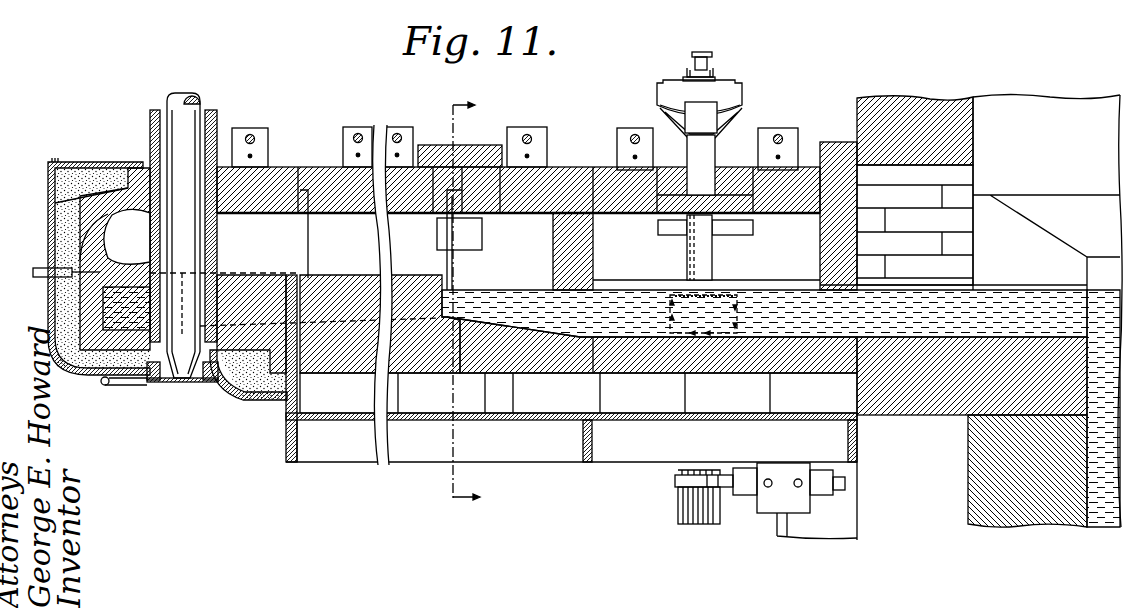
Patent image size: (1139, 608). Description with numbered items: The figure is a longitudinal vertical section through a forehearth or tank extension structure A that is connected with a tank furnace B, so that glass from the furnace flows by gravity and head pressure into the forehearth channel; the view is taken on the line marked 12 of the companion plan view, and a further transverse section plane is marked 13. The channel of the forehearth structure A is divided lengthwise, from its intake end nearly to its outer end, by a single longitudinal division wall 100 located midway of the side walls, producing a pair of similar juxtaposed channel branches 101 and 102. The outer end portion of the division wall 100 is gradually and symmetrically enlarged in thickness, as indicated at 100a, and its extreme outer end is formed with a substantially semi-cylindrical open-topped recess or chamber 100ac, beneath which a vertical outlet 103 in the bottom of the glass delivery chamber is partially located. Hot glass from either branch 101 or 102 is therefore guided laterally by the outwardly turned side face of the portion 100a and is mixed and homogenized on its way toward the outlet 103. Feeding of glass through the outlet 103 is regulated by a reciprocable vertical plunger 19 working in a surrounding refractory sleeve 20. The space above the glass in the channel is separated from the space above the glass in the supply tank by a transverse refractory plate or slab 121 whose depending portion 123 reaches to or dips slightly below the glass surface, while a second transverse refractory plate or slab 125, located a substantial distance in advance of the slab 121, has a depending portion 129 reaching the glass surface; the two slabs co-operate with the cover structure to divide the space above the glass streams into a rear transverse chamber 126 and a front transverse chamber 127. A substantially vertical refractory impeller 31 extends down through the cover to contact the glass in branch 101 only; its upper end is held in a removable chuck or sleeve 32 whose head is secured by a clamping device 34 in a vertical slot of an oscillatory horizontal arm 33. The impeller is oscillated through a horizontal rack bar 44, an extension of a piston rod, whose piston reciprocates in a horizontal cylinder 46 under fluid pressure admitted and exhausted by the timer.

The forehearth or tank extension structure A is at (83, 150).
The tank furnace B is at (962, 518).
The section line of Fig. 12 is at (17, 290).
The section line of Fig. 13 is at (483, 303).
The reciprocable vertical plunger 19 is at (185, 117).
The refractory sleeve 20 is at (214, 262).
The impeller 31 is at (703, 266).
The chuck or sleeve 32 is at (710, 120).
The oscillatory horizontal arm 33 is at (733, 97).
The clamping device 34 is at (712, 73).
The horizontal rack bar 44 is at (677, 479).
The horizontal cylinder 46 is at (757, 502).
The longitudinal division wall 100 is at (393, 286).
The enlarged outer end portion of the division wall 100a is at (310, 290).
The semi-cylindrical open-topped recess or chamber 100ac is at (235, 280).
The channel branch 101 is at (310, 330).
The channel branch 102 is at (618, 340).
The vertical outlet 103 is at (157, 372).
The transverse refractory plate or slab 121 is at (822, 241).
The depending portion of plate 121 123 is at (822, 282).
The transverse refractory plate or slab 125 is at (595, 233).
The rear transverse division or chamber 126 is at (742, 240).
The front transverse division or chamber 127 is at (480, 239).
The depending portion of plate 125 129 is at (595, 279).